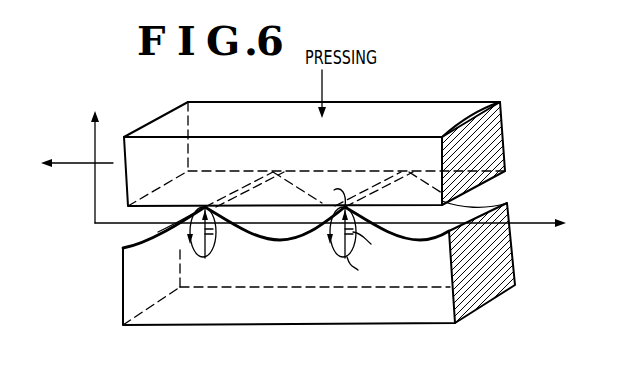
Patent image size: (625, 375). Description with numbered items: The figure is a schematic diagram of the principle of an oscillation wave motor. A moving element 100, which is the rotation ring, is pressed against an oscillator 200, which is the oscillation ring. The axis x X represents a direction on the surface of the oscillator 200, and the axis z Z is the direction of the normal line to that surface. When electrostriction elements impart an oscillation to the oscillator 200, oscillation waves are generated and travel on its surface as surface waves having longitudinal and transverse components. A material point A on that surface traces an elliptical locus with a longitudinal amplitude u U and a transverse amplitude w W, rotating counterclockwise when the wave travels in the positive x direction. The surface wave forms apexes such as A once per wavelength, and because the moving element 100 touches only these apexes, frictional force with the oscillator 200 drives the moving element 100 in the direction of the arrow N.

The moving element 100 is at (429, 110).
The oscillator 200 is at (319, 271).
The material point A is at (205, 207).
The transverse amplitude W is at (213, 232).
The longitudinal amplitude U is at (207, 257).
The axis x X is at (339, 224).
The axis z Z is at (94, 151).
The arrow N is at (68, 164).